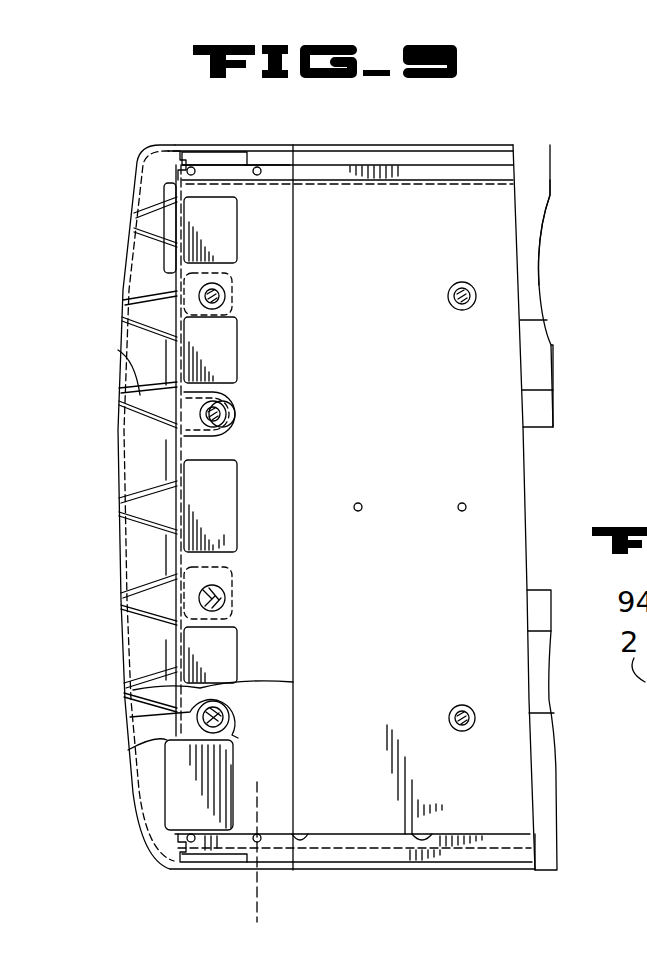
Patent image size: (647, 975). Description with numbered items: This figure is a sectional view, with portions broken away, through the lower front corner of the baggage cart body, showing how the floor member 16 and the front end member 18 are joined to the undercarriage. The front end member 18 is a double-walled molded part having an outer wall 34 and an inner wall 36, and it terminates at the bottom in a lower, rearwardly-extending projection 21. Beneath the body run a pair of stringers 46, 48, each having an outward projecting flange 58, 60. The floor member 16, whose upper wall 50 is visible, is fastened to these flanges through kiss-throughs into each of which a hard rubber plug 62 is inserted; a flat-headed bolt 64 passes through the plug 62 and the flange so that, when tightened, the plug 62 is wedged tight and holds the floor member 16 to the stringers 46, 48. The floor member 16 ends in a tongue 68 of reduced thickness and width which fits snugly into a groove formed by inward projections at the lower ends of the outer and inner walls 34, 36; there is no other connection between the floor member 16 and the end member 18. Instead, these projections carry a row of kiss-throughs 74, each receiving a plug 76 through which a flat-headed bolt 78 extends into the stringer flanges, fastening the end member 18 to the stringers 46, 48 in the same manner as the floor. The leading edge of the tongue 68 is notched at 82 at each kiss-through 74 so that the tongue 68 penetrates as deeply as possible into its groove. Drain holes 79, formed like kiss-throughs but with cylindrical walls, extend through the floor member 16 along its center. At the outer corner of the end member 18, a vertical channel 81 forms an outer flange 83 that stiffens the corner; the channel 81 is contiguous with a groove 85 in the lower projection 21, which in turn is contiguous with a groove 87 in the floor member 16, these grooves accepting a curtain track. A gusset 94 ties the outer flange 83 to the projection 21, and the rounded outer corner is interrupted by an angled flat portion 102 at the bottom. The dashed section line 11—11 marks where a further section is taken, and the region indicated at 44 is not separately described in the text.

The section line 11- 11 is at (258, 790).
The floor member 16 is at (422, 143).
The front end member 18 is at (135, 166).
The lower rearwardly-extending projection 21 is at (215, 871).
The outer wall 34 is at (122, 512).
The inner wall 36 is at (226, 582).
The curved wall portion 44 is at (128, 395).
The stringer 46 is at (555, 801).
The stringer 48 is at (545, 242).
The upper wall 50 is at (515, 447).
The outward projecting flange 58 is at (556, 848).
The outward projecting flange 60 is at (537, 194).
The plug 62 is at (447, 712).
The flat-headed bolt 64 is at (465, 706).
The tongue 68 is at (178, 260).
The kiss-throughs 74 is at (230, 712).
The hard rubber plug 76 is at (226, 294).
The flat-headed bolt 78 is at (232, 400).
The drain holes 79 is at (459, 504).
The vertical channel 81 is at (195, 168).
The notch 82 is at (160, 293).
The outer flange 83 is at (188, 160).
The groove 85 is at (297, 834).
The groove 87 is at (430, 836).
The gusset 94 is at (247, 158).
The angled flat portion 102 is at (238, 230).